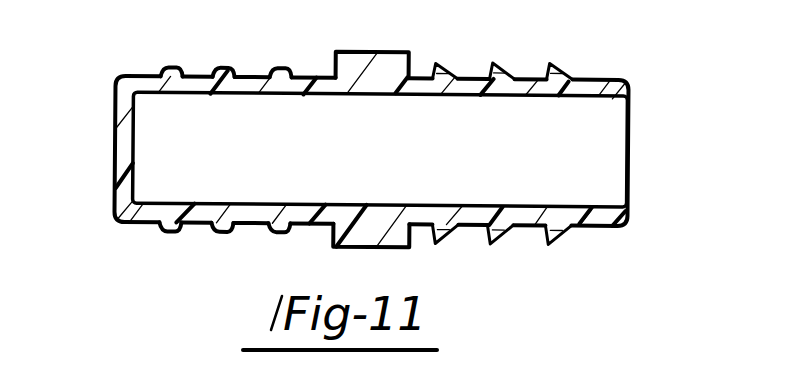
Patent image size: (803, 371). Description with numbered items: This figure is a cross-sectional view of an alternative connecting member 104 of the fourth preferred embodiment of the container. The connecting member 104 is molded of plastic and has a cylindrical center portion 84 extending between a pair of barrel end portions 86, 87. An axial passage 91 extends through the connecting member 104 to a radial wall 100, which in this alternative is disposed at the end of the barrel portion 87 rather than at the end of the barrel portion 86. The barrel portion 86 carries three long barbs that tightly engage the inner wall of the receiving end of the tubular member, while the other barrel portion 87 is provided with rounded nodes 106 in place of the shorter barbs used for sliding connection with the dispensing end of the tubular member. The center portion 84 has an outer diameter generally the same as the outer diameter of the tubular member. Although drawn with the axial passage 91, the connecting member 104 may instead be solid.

The cylindrical center portion 84 is at (363, 68).
The barbed barrel end portion 86 is at (547, 83).
The barrel end portion 87 is at (233, 85).
The axial bore 91 is at (598, 165).
The radial wall 100 is at (126, 147).
The alternative connecting member 104 is at (534, 257).
The rounded nodes 106 is at (221, 68).